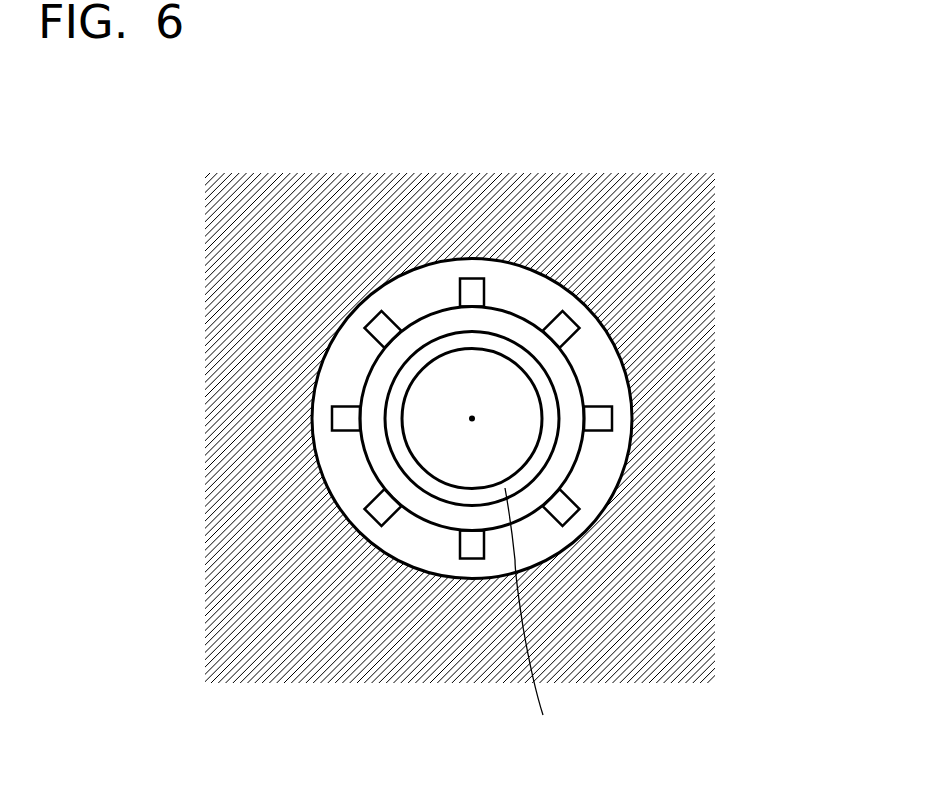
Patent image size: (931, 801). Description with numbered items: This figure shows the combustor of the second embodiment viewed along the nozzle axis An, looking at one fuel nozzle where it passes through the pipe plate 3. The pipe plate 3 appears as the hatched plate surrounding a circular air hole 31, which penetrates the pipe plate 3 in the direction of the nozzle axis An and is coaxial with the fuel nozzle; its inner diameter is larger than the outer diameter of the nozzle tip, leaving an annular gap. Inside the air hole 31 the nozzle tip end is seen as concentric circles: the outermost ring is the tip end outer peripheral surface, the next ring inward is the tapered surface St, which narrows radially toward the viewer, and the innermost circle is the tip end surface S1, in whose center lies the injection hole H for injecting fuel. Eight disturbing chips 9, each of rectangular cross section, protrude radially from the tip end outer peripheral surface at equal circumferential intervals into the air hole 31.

The pipe plate 3 is at (678, 240).
The air hole 31 is at (627, 383).
The disturbing chip 9 is at (553, 313).
The tapered surface St is at (380, 450).
The injection hole H is at (433, 470).
The tip end surface S1 is at (533, 619).
The nozzle axis An is at (579, 476).